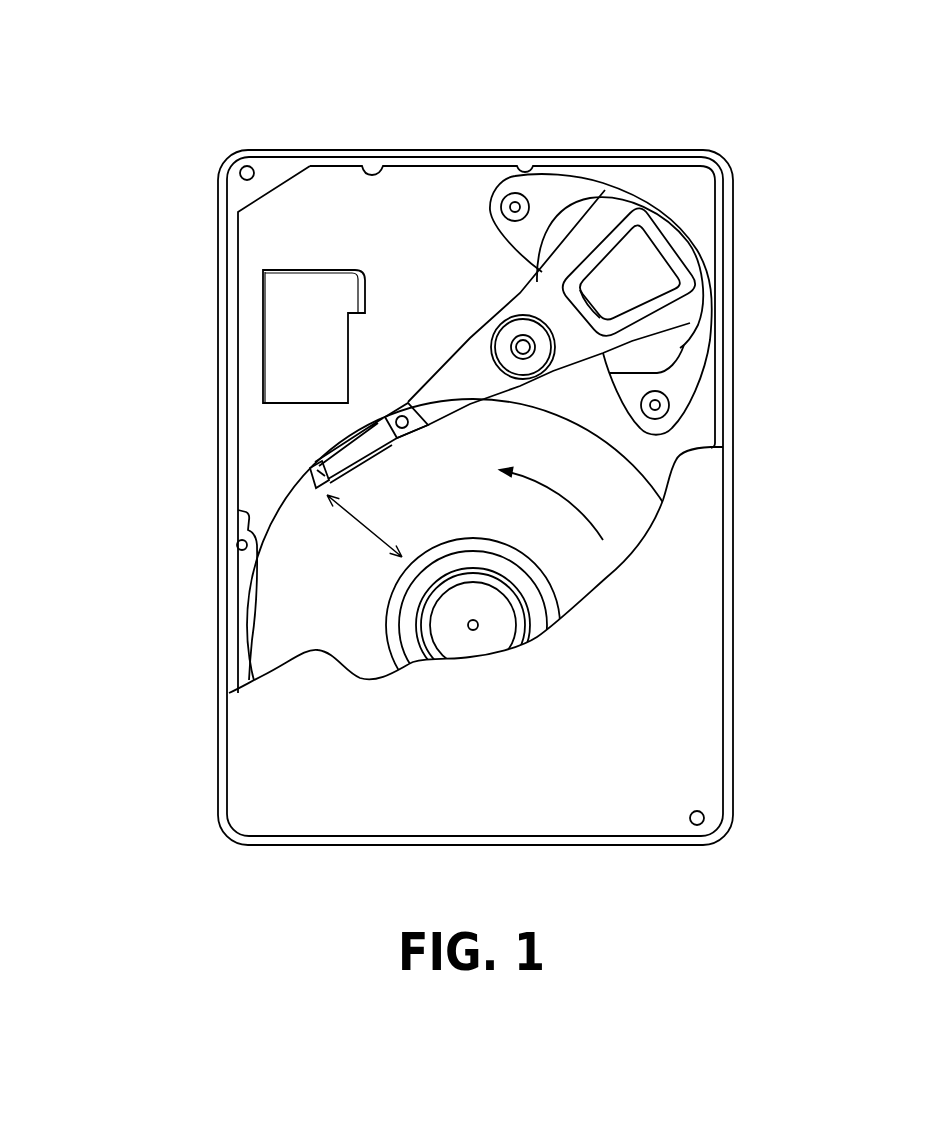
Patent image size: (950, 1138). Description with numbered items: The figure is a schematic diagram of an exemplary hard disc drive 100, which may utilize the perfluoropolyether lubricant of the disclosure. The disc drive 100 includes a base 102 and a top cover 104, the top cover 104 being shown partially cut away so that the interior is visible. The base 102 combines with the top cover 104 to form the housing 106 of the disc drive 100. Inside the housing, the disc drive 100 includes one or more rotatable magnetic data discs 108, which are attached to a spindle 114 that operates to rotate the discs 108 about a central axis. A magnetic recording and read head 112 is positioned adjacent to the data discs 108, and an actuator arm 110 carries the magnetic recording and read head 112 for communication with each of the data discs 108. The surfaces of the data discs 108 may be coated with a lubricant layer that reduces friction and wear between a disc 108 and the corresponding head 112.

The hard disc drive 100 is at (218, 78).
The base 102 is at (450, 254).
The top cover 104 is at (500, 716).
The housing 106 is at (727, 418).
The rotatable magnetic data disc 108 is at (467, 508).
The actuator arm 110 is at (468, 384).
The magnetic recording and read head 112 is at (305, 474).
The spindle 114 is at (468, 627).